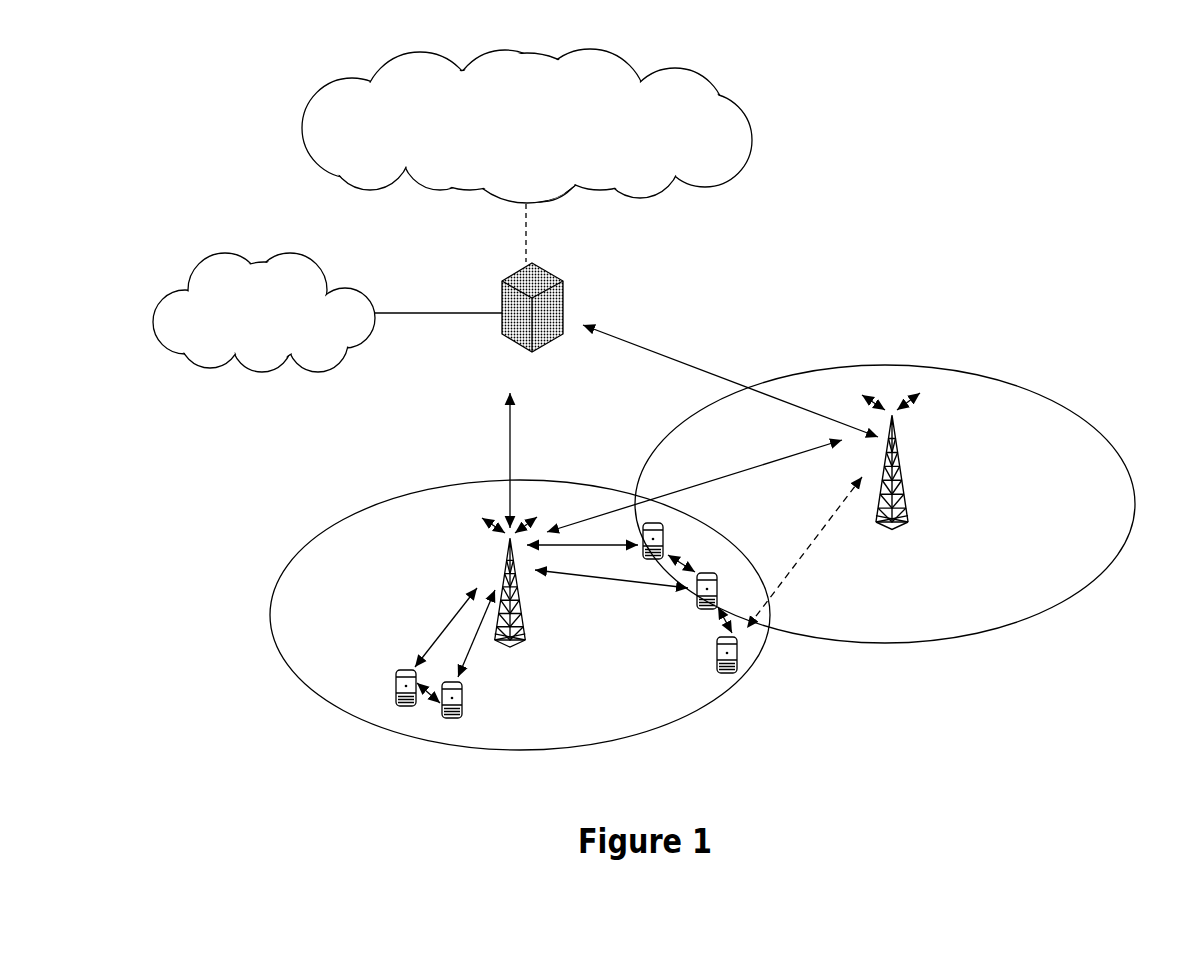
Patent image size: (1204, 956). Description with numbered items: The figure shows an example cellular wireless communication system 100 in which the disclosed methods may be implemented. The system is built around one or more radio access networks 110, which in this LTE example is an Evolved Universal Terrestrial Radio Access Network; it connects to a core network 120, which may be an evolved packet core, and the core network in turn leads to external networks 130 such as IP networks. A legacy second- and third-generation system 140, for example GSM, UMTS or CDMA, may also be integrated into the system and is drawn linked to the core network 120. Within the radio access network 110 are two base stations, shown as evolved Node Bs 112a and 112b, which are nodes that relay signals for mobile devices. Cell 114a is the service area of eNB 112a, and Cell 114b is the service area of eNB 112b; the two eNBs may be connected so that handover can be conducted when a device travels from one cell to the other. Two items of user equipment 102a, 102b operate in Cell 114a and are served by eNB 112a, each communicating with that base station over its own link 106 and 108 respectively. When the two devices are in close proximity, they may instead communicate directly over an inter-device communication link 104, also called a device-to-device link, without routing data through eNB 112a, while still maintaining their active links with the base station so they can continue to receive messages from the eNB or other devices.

The cellular wireless communication system 100 is at (976, 108).
The user equipment 102a is at (395, 676).
The user equipment 102b is at (463, 700).
The inter-device communication link 104 is at (421, 694).
The link between UE 102a and eNB 112a 106 is at (447, 618).
The link between UE 102b and eNB 112a 108 is at (475, 660).
The radio access network 110 is at (383, 502).
The evolved Node B 112a is at (503, 568).
The evolved Node B 112b is at (898, 457).
The cell 114a is at (314, 690).
The cell 114b is at (1100, 570).
The core network 120 is at (564, 297).
The external networks 130 is at (437, 50).
The 2G/3G systems 140 is at (190, 268).